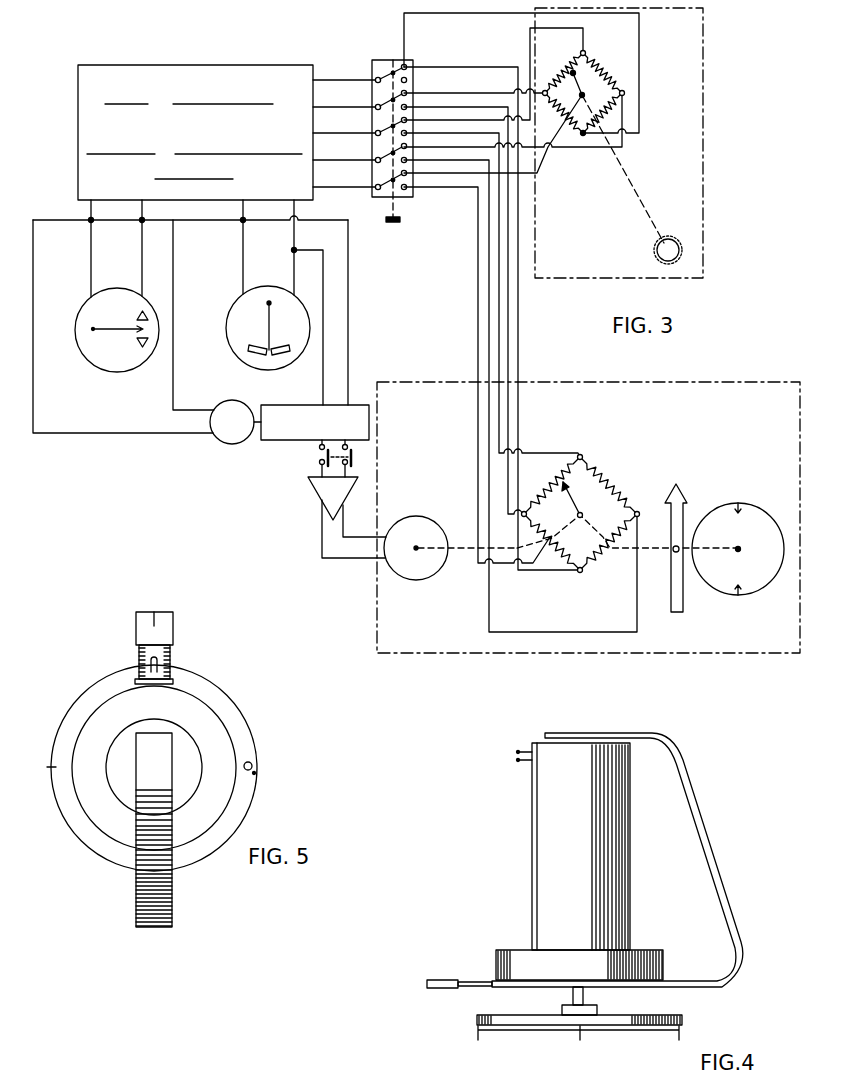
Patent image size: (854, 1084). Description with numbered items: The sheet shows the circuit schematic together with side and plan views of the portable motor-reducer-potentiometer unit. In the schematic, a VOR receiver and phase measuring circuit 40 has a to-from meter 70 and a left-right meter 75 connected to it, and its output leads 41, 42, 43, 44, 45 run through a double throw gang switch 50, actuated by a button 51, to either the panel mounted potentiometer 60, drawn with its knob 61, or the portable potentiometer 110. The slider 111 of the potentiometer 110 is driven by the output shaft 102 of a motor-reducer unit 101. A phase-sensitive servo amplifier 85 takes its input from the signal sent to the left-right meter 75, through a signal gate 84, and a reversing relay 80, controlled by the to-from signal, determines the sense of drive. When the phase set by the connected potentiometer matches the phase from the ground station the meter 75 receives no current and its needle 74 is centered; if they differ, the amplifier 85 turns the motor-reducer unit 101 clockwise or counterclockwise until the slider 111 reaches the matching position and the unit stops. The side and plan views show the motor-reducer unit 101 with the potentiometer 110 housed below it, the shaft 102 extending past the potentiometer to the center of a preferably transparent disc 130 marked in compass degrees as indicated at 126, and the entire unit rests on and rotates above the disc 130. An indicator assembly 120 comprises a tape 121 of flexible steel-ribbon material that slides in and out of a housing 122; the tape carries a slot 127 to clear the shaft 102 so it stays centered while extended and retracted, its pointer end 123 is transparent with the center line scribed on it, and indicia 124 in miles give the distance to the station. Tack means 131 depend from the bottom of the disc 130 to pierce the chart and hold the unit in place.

In FIG. 3, the VOR receiver and phase measuring circuit 40 is at (78, 103).
In FIG. 3, the output lead 41 is at (330, 80).
In FIG. 3, the output lead 42 is at (330, 107).
In FIG. 3, the output lead 43 is at (330, 133).
In FIG. 3, the output lead 44 is at (330, 160).
In FIG. 3, the output lead 45 is at (330, 187).
In FIG. 3, the gang switch 50 is at (373, 197).
In FIG. 3, the button 51 is at (396, 224).
In FIG. 3, the potentiometer 60 is at (703, 193).
In FIG. 3, the course selector knob 61 is at (681, 253).
In FIG. 3, the to-from meter 70 is at (96, 368).
In FIG. 3, the left-right needle 74 is at (267, 328).
In FIG. 3, the left-right meter 75 is at (268, 340).
In FIG. 3, the reversing relay 80 is at (219, 441).
In FIG. 3, the signal gate 84 is at (356, 455).
In FIG. 3, the phase-sensitive servo amplifier 85 is at (317, 489).
In FIG. 3, the motor-reducer unit 101 is at (401, 578).
In FIG. 5, the motor-reducer unit 101 is at (106, 779).
In FIG. 4, the motor-reducer unit 101 is at (532, 841).
In FIG. 3, the output shaft 102 is at (464, 551).
In FIG. 4, the output shaft 102 is at (585, 996).
In FIG. 3, the potentiometer 110 is at (613, 548).
In FIG. 5, the potentiometer 110 is at (76, 797).
In FIG. 4, the potentiometer 110 is at (515, 950).
In FIG. 3, the slider 111 is at (574, 500).
In FIG. 3, the indicator assembly 120 is at (683, 597).
In FIG. 4, the indicator assembly 120 is at (702, 994).
In FIG. 5, the tape 121 is at (139, 654).
In FIG. 4, the tape 121 is at (481, 981).
In FIG. 5, the housing 122 is at (172, 901).
In FIG. 4, the housing 122 is at (728, 940).
In FIG. 5, the pointer end 123 is at (166, 612).
In FIG. 4, the pointer end 123 is at (438, 989).
In FIG. 5, the indicia 124 is at (158, 650).
In FIG. 5, the compass rose degree markings 126 is at (256, 763).
In FIG. 5, the slot 127 is at (158, 662).
In FIG. 3, the disc 130 is at (756, 592).
In FIG. 5, the disc 130 is at (157, 768).
In FIG. 4, the disc 130 is at (683, 1021).
In FIG. 4, the tack means 131 is at (525, 1044).